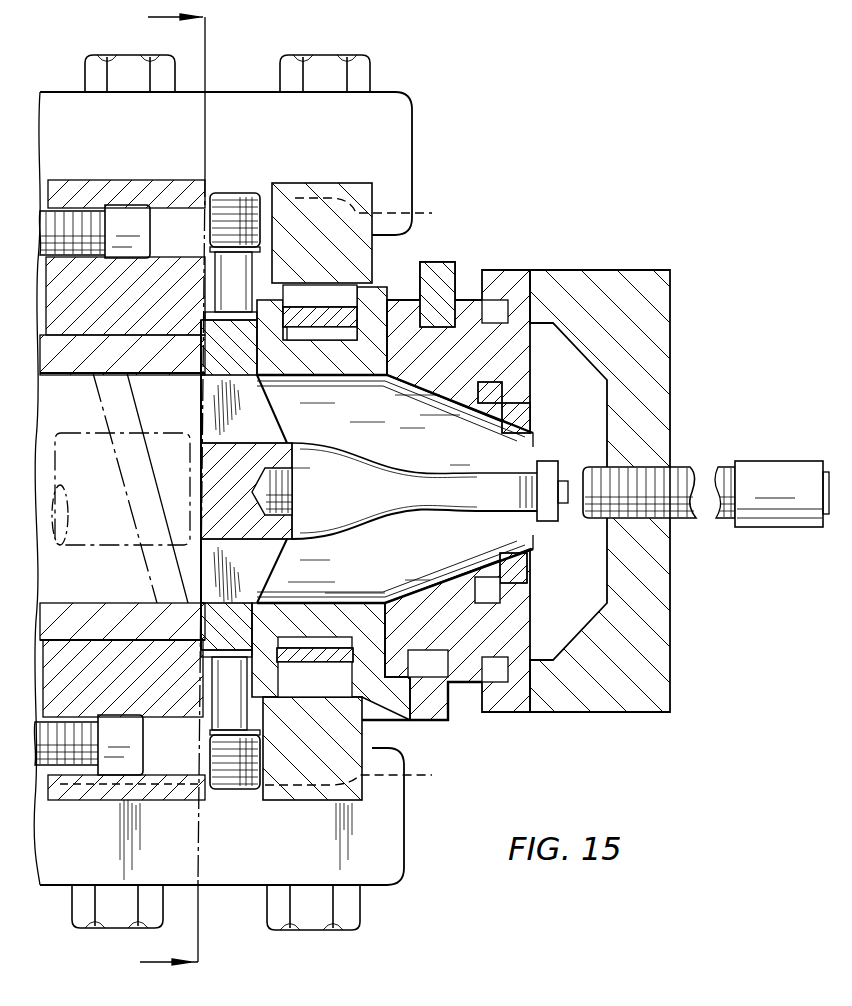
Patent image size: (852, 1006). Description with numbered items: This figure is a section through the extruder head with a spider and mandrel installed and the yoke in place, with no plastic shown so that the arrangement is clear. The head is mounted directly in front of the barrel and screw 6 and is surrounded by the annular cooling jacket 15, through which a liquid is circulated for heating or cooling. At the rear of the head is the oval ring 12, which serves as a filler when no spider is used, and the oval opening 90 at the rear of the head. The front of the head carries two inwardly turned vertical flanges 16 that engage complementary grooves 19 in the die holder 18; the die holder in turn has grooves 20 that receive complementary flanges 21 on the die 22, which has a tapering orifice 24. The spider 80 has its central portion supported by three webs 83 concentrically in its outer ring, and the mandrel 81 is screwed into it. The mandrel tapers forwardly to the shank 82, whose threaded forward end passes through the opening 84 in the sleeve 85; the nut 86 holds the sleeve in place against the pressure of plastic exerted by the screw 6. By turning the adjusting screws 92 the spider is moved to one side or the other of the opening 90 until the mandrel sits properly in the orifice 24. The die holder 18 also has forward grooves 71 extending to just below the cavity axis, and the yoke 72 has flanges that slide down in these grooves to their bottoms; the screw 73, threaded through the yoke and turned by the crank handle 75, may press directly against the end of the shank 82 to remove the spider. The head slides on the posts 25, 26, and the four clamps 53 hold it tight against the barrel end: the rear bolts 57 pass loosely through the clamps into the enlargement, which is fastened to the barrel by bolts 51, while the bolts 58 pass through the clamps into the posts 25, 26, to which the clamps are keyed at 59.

The screw 6 is at (97, 538).
The oval ring 12 is at (192, 492).
The annular cooling jacket 15 is at (408, 722).
The vertical flanges 16 is at (449, 283).
The die holder 18 is at (496, 335).
The grooves 19 is at (436, 282).
The grooves 20 is at (498, 594).
The flanges 21 is at (528, 385).
The die 22 is at (528, 568).
The tapering orifice 24 is at (533, 436).
The post 25 is at (368, 745).
The post 26 is at (362, 184).
The bolts 51 is at (80, 217).
The clamps 53 is at (407, 112).
The rear bolts 57 is at (117, 62).
The bolts 58 is at (331, 63).
The key 59 is at (362, 493).
The forward grooves 71 is at (494, 662).
The yoke 72 is at (610, 290).
The screw 73 is at (651, 468).
The crank handle 75 is at (780, 528).
The spider 80 is at (210, 355).
The mandrel 81 is at (337, 527).
The shank 82 is at (448, 495).
The webs 83 is at (215, 411).
The opening 84 is at (456, 479).
The sleeve 85 is at (530, 546).
The nut 86 is at (545, 462).
The opening 90 is at (248, 662).
The adjusting screws 92 is at (229, 196).